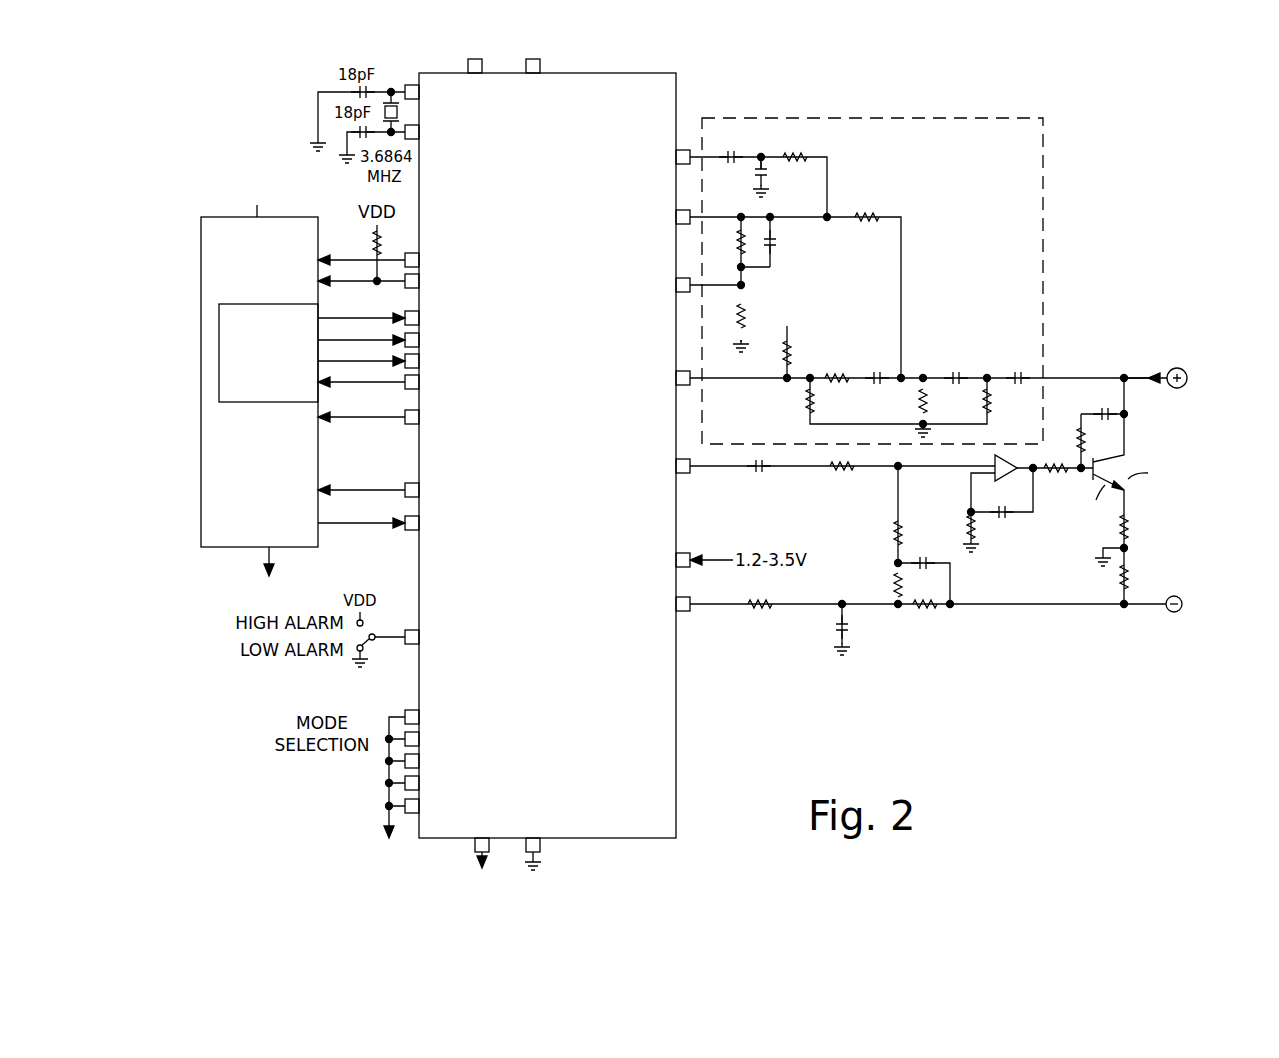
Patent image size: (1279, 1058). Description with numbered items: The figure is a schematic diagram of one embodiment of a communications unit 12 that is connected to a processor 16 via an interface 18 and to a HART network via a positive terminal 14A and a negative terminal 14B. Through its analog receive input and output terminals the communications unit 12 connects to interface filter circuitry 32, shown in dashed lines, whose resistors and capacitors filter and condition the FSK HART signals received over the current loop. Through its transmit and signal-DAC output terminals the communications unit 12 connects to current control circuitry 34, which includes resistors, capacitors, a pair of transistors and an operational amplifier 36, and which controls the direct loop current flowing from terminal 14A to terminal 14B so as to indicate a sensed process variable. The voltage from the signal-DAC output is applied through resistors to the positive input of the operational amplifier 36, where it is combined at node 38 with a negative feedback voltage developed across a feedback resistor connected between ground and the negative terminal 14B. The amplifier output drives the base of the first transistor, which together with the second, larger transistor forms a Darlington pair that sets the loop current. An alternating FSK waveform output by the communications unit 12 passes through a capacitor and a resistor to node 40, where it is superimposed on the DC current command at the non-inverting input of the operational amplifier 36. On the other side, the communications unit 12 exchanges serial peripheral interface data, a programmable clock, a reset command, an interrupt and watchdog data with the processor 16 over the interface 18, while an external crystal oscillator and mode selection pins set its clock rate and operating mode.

The communications unit 12 is at (628, 73).
The processor 16 is at (215, 217).
The interface 18 is at (340, 535).
The interface filter circuitry 32 is at (975, 117).
The current control circuitry 34 is at (1082, 622).
The operational amplifier 36 is at (1012, 461).
The node 38 is at (900, 612).
The node 40 is at (905, 470).
The positive terminal 14A is at (1187, 372).
The negative terminal 14B is at (1175, 613).